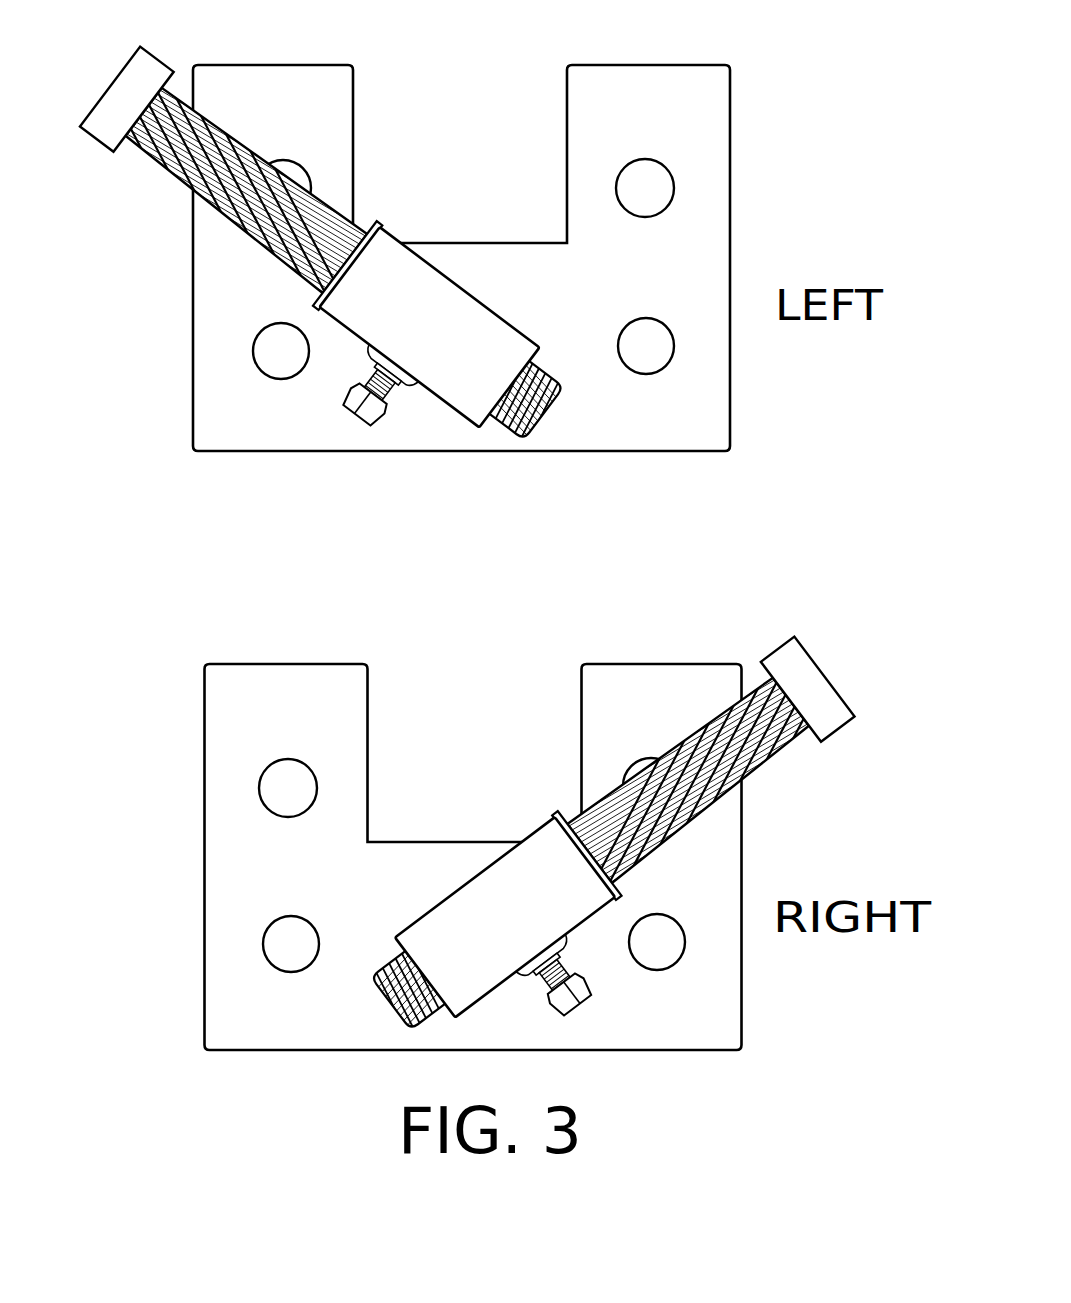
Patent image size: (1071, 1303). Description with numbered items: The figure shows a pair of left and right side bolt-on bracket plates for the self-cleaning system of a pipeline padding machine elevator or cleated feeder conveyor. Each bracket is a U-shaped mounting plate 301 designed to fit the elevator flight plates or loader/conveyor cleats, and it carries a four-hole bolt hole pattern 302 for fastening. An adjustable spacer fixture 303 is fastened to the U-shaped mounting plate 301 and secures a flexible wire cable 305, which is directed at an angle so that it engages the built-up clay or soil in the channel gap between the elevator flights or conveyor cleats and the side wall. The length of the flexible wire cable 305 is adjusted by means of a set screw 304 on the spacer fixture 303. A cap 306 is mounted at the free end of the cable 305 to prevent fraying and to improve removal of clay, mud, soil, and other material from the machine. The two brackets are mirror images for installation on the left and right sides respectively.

The U-shaped mounting plate 301 is at (667, 112).
The bolt hole pattern 302 is at (652, 191).
The adjustable spacer fixture 303 is at (462, 380).
The set screw 304 is at (363, 421).
The flexible wire cable 305 is at (196, 174).
The cap 306 is at (108, 118).